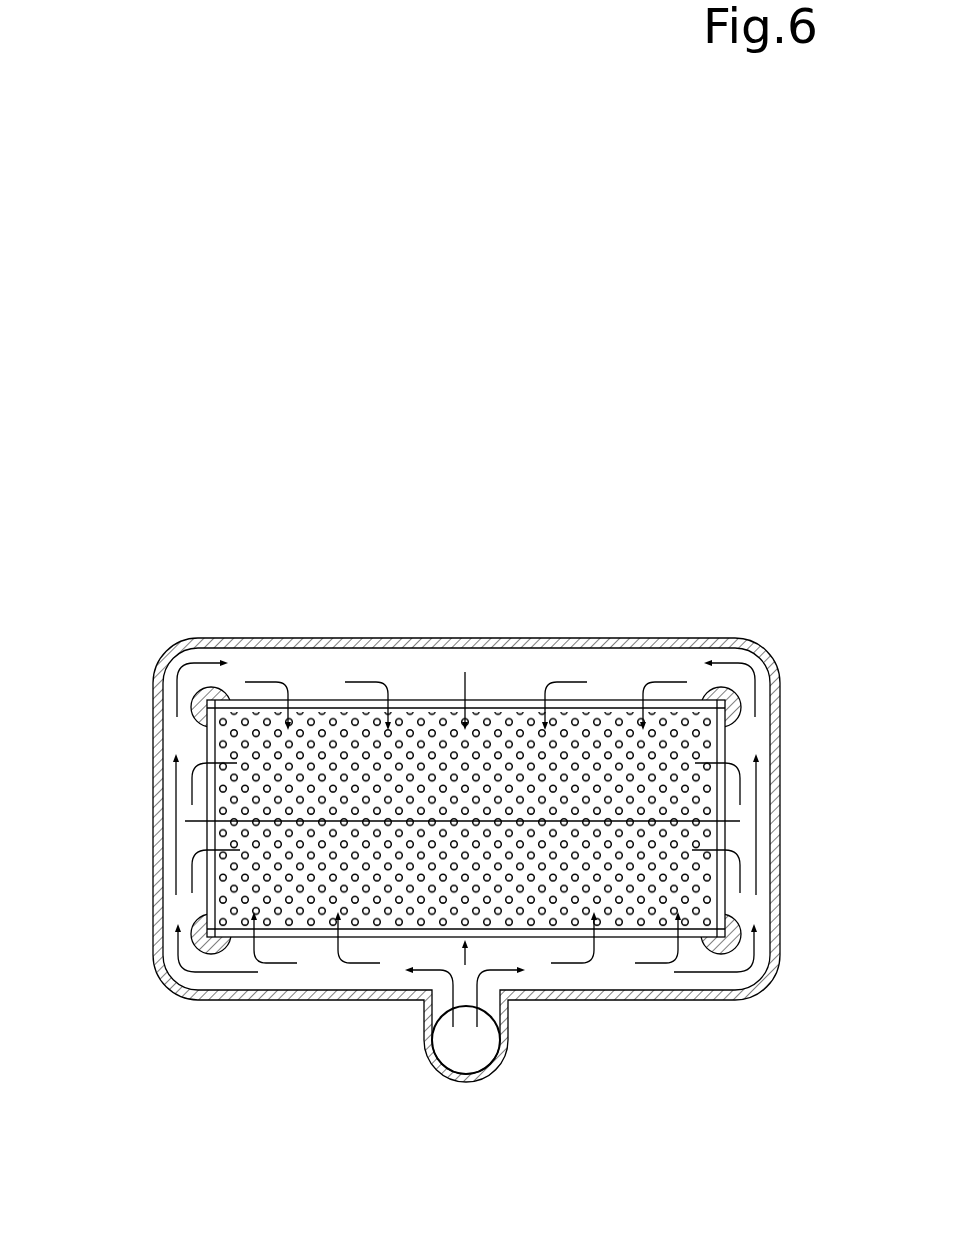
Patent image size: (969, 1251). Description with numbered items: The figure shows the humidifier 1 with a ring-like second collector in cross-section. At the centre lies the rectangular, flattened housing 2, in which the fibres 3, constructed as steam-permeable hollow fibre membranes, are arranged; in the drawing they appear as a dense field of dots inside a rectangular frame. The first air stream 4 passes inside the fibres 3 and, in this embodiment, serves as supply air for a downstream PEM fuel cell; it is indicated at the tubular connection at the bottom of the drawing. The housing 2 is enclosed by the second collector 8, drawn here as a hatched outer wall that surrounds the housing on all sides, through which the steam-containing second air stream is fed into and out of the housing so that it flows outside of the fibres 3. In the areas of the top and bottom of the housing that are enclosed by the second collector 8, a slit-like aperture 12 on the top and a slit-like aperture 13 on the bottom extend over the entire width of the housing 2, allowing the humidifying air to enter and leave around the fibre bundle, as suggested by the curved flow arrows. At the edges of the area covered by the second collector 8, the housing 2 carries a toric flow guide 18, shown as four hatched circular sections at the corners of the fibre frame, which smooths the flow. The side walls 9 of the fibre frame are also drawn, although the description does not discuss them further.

The humidifier 1 is at (742, 524).
The housing 2 is at (205, 782).
The fibres 3 is at (672, 860).
The first air stream 4 is at (455, 1052).
The second collector 8 is at (594, 640).
The side wall 9 is at (210, 882).
The slit-like aperture 12 is at (415, 698).
The slit-like aperture 13 is at (647, 922).
The toric flow guide 18 is at (207, 703).